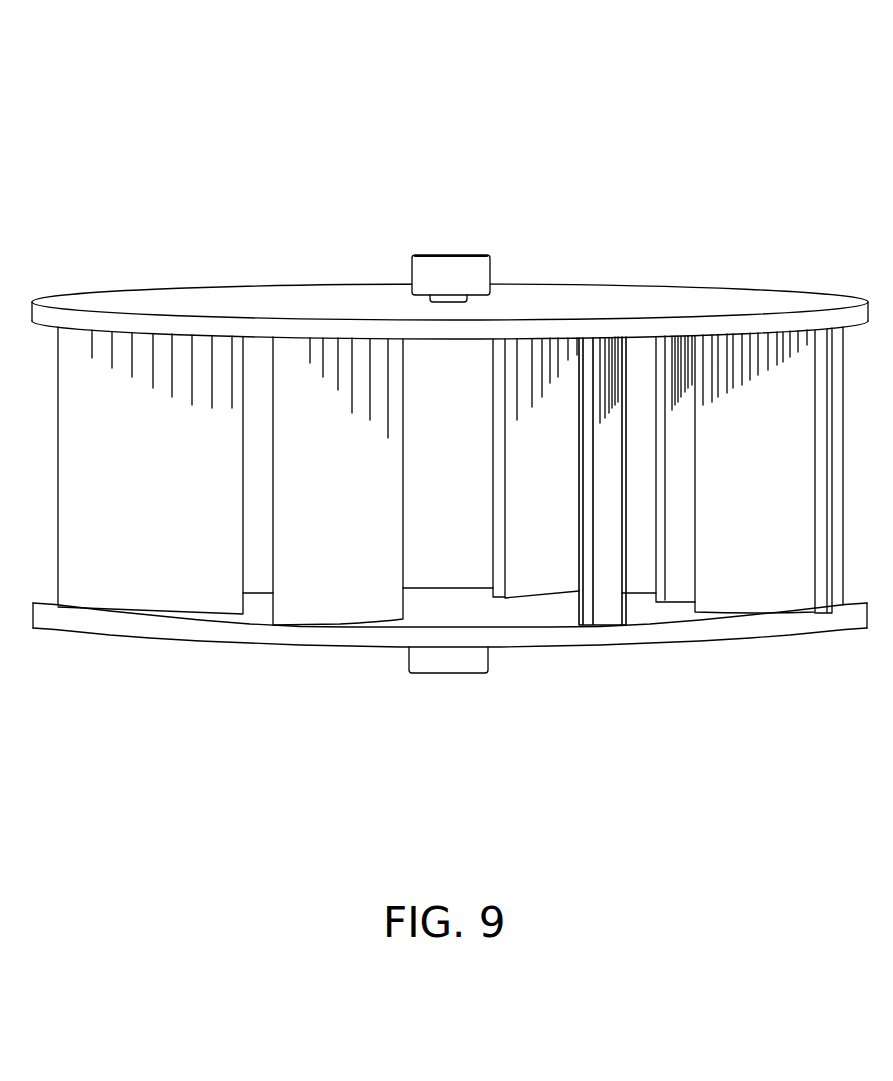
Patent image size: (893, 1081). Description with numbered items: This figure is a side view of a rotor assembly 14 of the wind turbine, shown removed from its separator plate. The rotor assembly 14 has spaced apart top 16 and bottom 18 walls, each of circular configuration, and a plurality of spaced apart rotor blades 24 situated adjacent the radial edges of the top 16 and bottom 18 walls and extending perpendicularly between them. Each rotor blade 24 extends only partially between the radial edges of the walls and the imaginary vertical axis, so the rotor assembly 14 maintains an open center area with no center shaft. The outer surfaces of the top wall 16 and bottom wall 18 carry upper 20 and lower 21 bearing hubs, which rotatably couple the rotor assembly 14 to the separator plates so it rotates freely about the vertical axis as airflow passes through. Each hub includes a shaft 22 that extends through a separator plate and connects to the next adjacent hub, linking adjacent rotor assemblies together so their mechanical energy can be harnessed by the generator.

The rotor assembly 14 is at (748, 155).
The top wall 16 is at (310, 298).
The bottom wall 18 is at (547, 621).
The upper bearing hub 20 is at (468, 273).
The lower bearing hub 21 is at (428, 660).
The shaft 22 is at (470, 297).
The rotor blade 24 is at (184, 489).